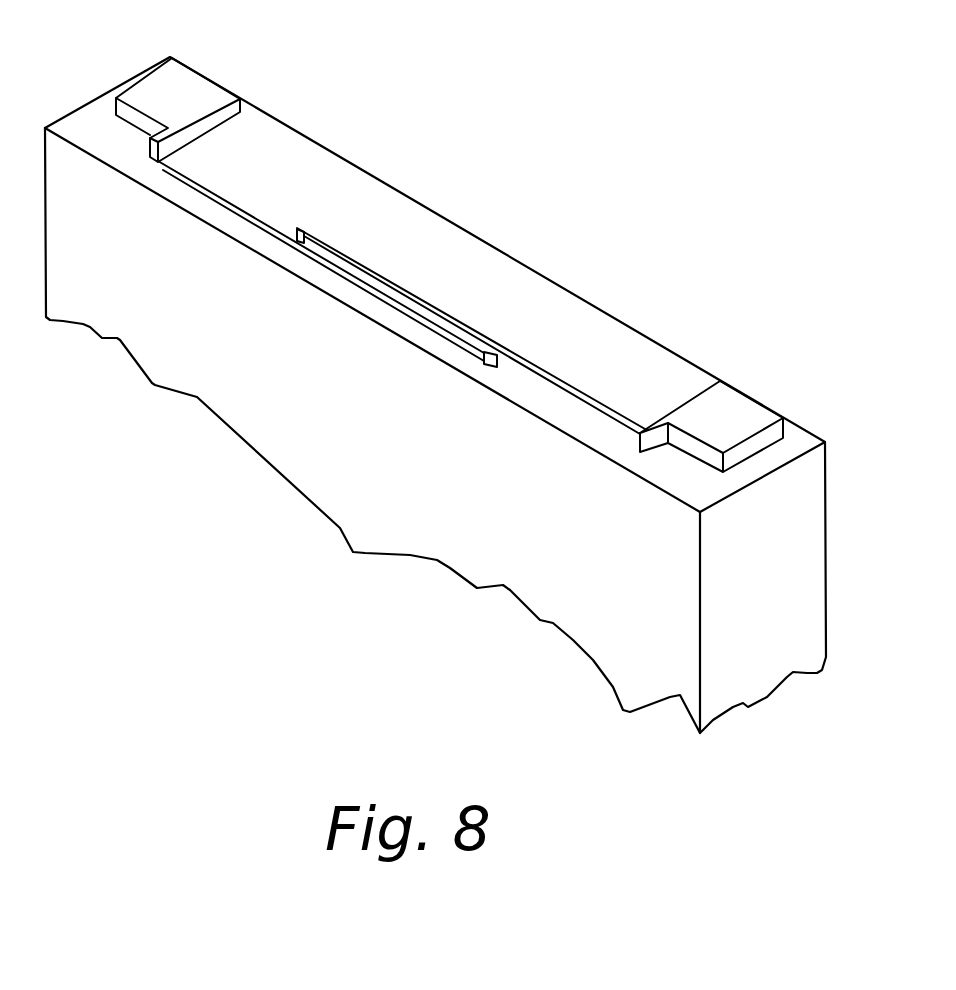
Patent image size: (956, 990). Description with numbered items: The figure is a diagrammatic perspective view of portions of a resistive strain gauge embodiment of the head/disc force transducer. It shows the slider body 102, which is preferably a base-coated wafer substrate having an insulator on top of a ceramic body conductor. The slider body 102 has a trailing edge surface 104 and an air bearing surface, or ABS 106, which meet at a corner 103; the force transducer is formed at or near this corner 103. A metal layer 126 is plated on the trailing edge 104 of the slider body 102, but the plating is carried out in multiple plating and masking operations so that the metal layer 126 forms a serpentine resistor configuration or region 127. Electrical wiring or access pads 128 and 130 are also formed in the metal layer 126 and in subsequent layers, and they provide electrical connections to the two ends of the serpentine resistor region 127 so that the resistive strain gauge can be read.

The slider body 102 is at (366, 122).
The corner 103 is at (633, 472).
The trailing edge surface 104 is at (595, 342).
The ABS 106 is at (275, 393).
The metal layer 126 is at (533, 337).
The serpentine resistor region 127 is at (368, 263).
The electrical access pad 128 is at (181, 90).
The electrical access pad 130 is at (727, 418).